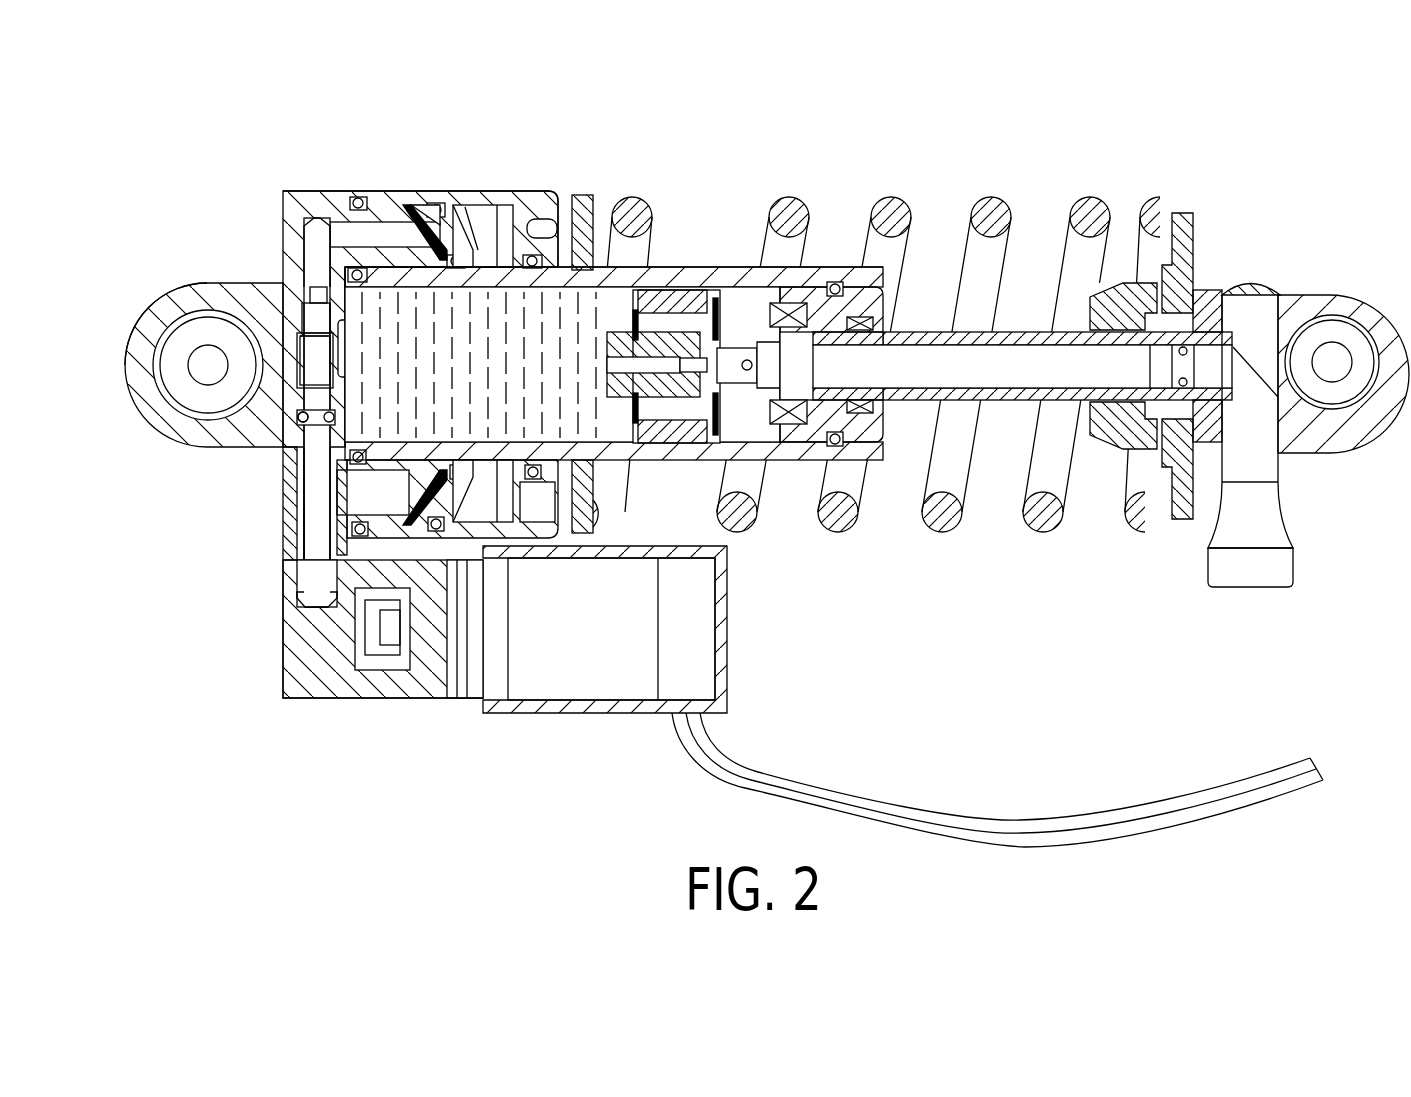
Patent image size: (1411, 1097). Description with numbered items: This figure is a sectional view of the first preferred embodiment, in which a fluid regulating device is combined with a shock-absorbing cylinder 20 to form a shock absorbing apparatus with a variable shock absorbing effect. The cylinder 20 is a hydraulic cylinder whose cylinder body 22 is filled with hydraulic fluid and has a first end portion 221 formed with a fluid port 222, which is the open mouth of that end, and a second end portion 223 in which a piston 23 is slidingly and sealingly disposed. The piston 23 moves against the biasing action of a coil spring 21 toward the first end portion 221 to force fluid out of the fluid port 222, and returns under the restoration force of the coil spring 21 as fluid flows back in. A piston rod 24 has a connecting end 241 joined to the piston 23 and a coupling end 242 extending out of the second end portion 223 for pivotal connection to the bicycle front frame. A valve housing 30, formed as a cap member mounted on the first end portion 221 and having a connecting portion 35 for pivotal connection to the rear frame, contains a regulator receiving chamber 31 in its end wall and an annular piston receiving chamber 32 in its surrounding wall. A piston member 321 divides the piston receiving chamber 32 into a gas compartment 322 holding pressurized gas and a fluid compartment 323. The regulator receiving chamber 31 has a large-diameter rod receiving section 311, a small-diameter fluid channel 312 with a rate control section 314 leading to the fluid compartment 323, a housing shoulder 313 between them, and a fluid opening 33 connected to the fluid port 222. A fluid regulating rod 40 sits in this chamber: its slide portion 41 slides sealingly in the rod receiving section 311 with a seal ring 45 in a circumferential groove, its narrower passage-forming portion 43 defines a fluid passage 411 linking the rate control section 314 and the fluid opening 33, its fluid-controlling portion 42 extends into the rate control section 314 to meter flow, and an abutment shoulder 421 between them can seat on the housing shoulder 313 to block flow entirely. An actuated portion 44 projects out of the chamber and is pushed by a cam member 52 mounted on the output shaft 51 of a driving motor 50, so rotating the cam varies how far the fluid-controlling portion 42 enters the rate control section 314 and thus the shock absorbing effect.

The shock-absorbing cylinder 20 is at (705, 232).
The coil spring 21 is at (889, 215).
The cylinder body 22 is at (500, 262).
The first end portion 221 is at (344, 469).
The fluid port 222 is at (340, 380).
The second end portion 223 is at (868, 438).
The piston 23 is at (675, 413).
The piston rod 24 is at (1040, 332).
The connecting end 241 is at (722, 343).
The coupling end 242 is at (1205, 362).
The valve housing 30 is at (555, 180).
The regulator receiving chamber 31 is at (357, 280).
The rod receiving section 311 is at (290, 448).
The fluid channel 312 is at (318, 262).
The housing shoulder 313 is at (310, 313).
The rate control section 314 is at (310, 267).
The piston receiving chamber 32 is at (425, 230).
The piston member 321 is at (423, 210).
The gas compartment 322 is at (478, 222).
The fluid compartment 323 is at (345, 520).
The fluid opening 33 is at (342, 367).
The connecting portion 35 is at (135, 342).
The fluid regulating rod 40 is at (290, 517).
The slide portion 41 is at (310, 400).
The fluid passage 411 is at (148, 330).
The fluid-controlling portion 42 is at (303, 285).
The abutment shoulder 421 is at (312, 290).
The passage-forming portion 43 is at (310, 342).
The actuated portion 44 is at (308, 540).
The seal ring 45 is at (296, 430).
The driving motor 50 is at (375, 705).
The output shaft 51 is at (400, 628).
The cam member 52 is at (323, 640).